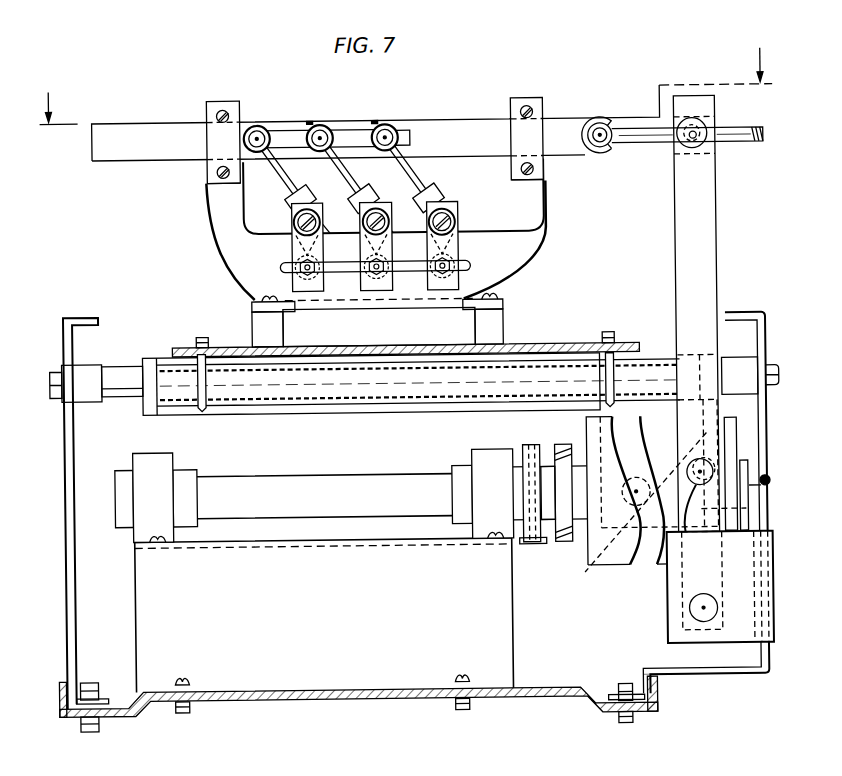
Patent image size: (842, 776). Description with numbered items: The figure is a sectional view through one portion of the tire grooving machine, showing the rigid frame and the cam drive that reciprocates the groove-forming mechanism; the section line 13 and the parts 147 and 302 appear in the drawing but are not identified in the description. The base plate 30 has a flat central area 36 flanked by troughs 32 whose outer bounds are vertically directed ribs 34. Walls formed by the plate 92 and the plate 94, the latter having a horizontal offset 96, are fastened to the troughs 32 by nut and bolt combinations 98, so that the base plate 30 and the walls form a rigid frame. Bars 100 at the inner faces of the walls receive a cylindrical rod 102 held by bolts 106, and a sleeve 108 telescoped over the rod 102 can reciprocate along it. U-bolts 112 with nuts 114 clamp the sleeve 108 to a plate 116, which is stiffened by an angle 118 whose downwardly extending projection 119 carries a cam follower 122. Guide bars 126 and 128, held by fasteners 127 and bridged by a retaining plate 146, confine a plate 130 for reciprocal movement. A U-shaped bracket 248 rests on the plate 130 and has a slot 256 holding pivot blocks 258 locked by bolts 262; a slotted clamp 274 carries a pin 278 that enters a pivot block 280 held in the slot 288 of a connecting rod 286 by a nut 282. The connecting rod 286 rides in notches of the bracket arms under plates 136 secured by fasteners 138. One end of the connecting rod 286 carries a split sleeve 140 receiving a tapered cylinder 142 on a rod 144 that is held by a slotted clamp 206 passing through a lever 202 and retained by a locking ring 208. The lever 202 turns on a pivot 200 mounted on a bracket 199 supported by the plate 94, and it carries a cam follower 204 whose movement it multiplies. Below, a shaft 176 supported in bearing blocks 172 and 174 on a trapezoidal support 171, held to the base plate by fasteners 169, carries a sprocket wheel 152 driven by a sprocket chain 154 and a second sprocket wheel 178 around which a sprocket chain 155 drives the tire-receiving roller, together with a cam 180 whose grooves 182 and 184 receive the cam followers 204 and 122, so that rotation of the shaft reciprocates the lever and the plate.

The section line 13- 13 is at (405, 75).
The base plate 30 is at (412, 542).
The elongated troughs 32 is at (126, 715).
The vertically directed ribs 34 is at (57, 700).
The central area 36 is at (264, 699).
The plate 92 is at (68, 565).
The plate 94 is at (768, 482).
The horizontal offset 96 is at (718, 676).
The nut and bolt combinations 98 is at (80, 729).
The bars 100 is at (92, 404).
The cylindrical rod 102 is at (131, 364).
The bolts 106 is at (52, 393).
The sleeve 108 is at (302, 392).
The U-bolts 112 is at (200, 410).
The nuts 114 is at (200, 337).
The plate 116 is at (572, 345).
The angle 118 is at (151, 413).
The downwardly extending projection 119 is at (634, 510).
The cam follower 122 is at (638, 492).
The guide bar 126 is at (500, 326).
The fasteners 127 is at (264, 297).
The guide bar 128 is at (256, 324).
The plate 130 is at (379, 326).
The plates 136 is at (234, 184).
The fasteners 138 is at (236, 97).
The split sleeve 140 is at (609, 119).
The cylinder 142 is at (611, 144).
The rod 144 is at (661, 146).
The retaining plate 146 is at (506, 309).
The left cap plate 147 is at (253, 305).
The sprocket wheel 152 is at (529, 463).
The sprocket chain 154 is at (522, 546).
The sprocket chain 155 is at (560, 460).
The fasteners 169 is at (186, 679).
The support 171 is at (133, 612).
The bearing block 172 is at (490, 451).
The bearing block 174 is at (168, 467).
The rotatable shaft 176 is at (351, 487).
The second sprocket wheel 178 is at (563, 522).
The cam 180 is at (737, 432).
The cam groove 182 is at (748, 512).
The cam groove 184 is at (627, 562).
The bracket 199 is at (748, 670).
The pivot 200 is at (690, 613).
The lever 202 is at (720, 236).
The cam follower 204 is at (712, 470).
The slotted clamp 206 is at (699, 141).
The locking ring 208 is at (707, 122).
The bracket 248 is at (549, 240).
The slot 256 is at (283, 267).
The pivot blocks 258 is at (350, 296).
The bolts 262 is at (404, 299).
The slotted clamp 274 is at (313, 202).
The pin 278 is at (294, 190).
The pivot block 280 is at (314, 120).
The nut 282 is at (259, 122).
The connecting rod 286 is at (144, 160).
The slot 288 is at (282, 137).
The terminal screw 302 is at (296, 218).